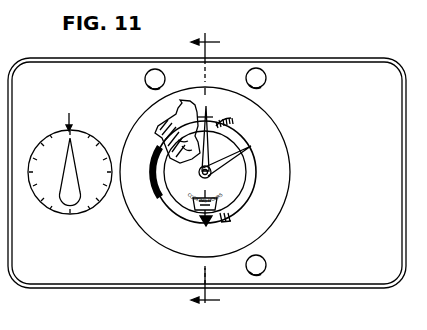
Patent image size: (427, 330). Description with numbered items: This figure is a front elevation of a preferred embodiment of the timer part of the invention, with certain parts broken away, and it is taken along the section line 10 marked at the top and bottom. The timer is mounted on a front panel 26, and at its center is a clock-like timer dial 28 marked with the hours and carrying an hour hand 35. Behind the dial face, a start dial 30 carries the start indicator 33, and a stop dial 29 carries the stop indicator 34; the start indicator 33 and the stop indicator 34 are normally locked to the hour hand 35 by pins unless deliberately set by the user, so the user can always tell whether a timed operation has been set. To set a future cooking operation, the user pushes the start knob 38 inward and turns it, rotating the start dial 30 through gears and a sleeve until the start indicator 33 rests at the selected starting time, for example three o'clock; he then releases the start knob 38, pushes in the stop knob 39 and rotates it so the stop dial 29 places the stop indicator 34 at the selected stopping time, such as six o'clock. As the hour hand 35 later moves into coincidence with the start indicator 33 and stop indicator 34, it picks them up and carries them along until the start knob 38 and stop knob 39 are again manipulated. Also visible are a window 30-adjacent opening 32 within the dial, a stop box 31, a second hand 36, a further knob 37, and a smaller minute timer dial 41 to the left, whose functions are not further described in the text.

The section line 10 is at (214, 170).
The front panel 26 is at (398, 188).
The timer dial 28 is at (266, 114).
The stop dial 29 is at (217, 120).
The start dial 30 is at (178, 100).
The stop indicator 31 is at (217, 205).
The hatched window area 32 is at (176, 138).
The start indicator 33 is at (262, 168).
The stop indicator 34 is at (200, 227).
The hour hand 35 is at (245, 152).
The hand 36 is at (210, 146).
The knob 37 is at (145, 78).
The start knob 38 is at (266, 78).
The stop knob 39 is at (264, 264).
The minute timer dial 41 is at (58, 133).